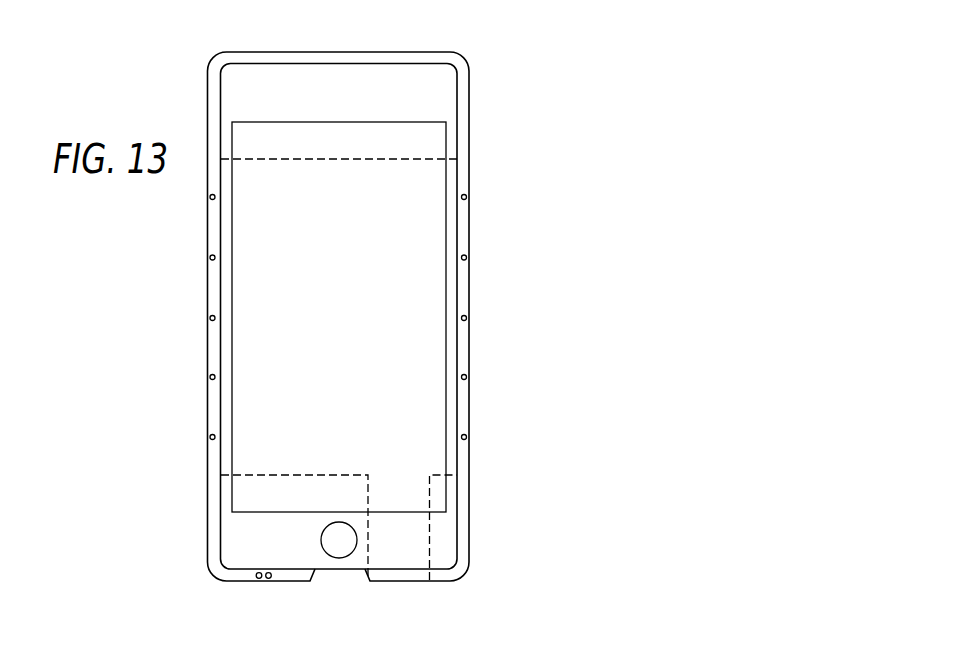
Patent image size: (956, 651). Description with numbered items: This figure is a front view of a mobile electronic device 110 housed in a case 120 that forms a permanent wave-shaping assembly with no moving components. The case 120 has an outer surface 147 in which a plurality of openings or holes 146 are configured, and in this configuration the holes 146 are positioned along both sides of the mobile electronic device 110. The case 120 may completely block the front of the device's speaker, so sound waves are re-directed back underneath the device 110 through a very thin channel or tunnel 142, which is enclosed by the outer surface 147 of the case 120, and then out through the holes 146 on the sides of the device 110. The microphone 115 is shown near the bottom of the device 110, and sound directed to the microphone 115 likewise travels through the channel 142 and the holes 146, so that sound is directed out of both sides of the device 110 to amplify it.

The case 120 is at (447, 52).
The mobile electronic device 110 is at (433, 88).
The openings or holes 146 is at (467, 197).
The outer surface 147 is at (467, 241).
The microphone 115 is at (265, 582).
The channel or tunnel 142 is at (402, 581).